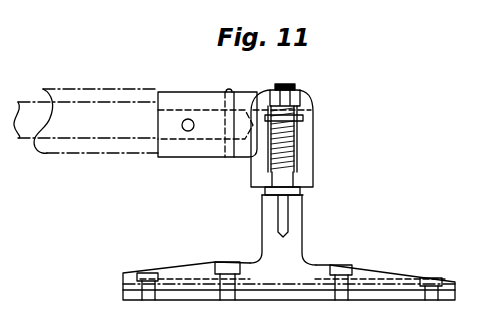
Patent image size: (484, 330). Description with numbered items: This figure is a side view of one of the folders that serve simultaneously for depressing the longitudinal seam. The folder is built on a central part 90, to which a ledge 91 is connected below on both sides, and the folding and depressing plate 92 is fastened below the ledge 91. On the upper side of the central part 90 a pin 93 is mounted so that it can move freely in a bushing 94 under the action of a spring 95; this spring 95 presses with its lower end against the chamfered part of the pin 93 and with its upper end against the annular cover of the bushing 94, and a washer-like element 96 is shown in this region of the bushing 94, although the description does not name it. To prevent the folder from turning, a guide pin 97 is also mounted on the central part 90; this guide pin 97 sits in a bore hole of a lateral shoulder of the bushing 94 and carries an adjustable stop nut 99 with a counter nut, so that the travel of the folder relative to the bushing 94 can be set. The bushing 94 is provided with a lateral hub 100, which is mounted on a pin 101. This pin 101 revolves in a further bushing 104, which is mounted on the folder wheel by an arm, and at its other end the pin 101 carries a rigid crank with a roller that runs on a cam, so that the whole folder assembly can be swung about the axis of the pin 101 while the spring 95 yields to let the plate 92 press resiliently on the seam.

The central part 90 is at (292, 239).
The ledge 91 is at (378, 282).
The folding and depressing plate 92 is at (388, 299).
The pin 93 is at (266, 190).
The bushing 94 is at (314, 160).
The spring 95 is at (300, 138).
The washer 96 is at (265, 102).
The guide pin 97 is at (301, 192).
The adjustable stop nut 99 is at (297, 93).
The lateral hub 100 is at (165, 95).
The pin 101 is at (30, 104).
The bushing 104 is at (75, 94).